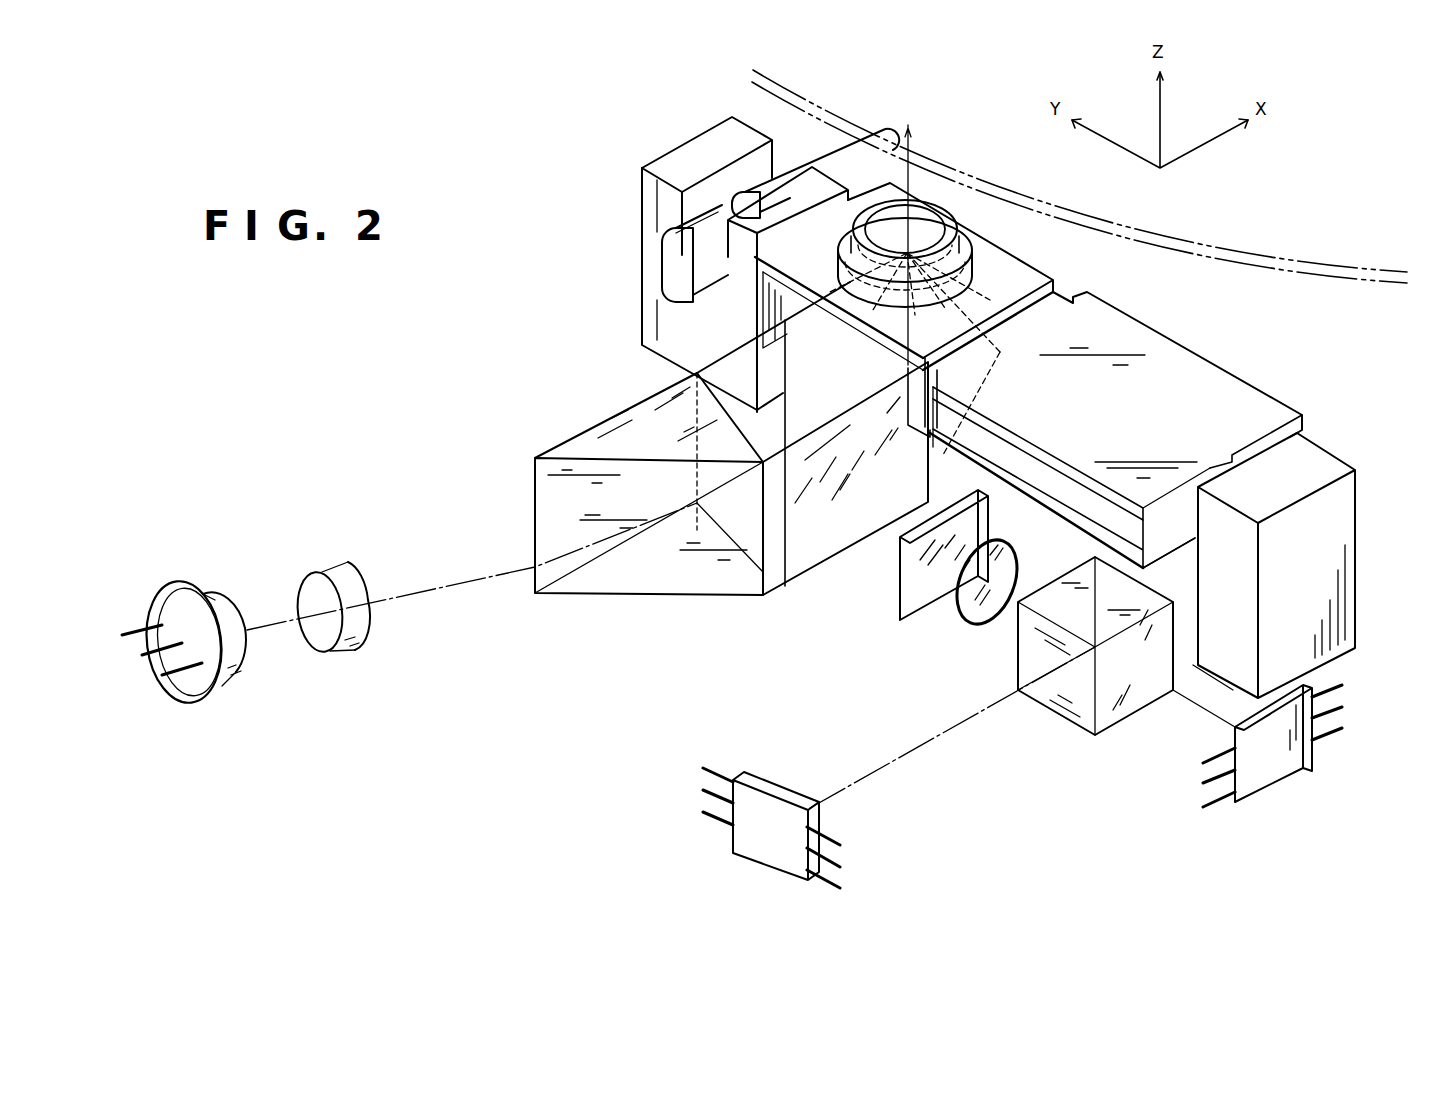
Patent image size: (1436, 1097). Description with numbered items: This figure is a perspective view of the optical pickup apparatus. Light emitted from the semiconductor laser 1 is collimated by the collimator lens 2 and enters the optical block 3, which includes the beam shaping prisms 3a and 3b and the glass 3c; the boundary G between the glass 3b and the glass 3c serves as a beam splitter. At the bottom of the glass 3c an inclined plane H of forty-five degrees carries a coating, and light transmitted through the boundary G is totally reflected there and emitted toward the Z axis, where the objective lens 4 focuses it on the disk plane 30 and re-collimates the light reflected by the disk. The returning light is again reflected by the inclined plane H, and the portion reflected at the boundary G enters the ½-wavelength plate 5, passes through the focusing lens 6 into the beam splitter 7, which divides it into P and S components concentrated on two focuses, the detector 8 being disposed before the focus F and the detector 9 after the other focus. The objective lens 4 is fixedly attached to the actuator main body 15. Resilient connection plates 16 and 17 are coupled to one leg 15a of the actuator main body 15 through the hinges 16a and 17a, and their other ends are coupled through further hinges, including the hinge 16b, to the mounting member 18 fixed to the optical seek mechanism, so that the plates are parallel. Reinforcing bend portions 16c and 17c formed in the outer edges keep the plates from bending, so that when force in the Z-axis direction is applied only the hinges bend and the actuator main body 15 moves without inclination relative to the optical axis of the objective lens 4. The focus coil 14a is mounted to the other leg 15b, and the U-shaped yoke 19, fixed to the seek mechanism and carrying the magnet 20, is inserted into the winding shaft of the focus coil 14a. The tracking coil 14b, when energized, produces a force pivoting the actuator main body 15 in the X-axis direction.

The semiconductor laser 1 is at (236, 675).
The collimator lens 2 is at (353, 650).
The optical block 3 is at (693, 494).
The beam shaping prism 3a is at (600, 600).
The beam shaping prism 3b is at (777, 580).
The glass 3c is at (862, 552).
The objective lens 4 is at (963, 213).
The ½-wavelength plate 5 is at (923, 623).
The focusing lens 6 is at (987, 623).
The beam splitter 7 is at (1095, 728).
The detector 8 is at (1270, 780).
The detector 9 is at (743, 848).
The focus coil 14a is at (707, 302).
The tracking coil 14b is at (783, 165).
The actuator main body 15 is at (830, 321).
The leg of the actuator main body 15a is at (900, 403).
The other leg of the actuator main body 15b is at (697, 373).
The connection plate 16 is at (1155, 395).
The hinge 16a is at (1053, 290).
The hinge 16b is at (1230, 460).
The reinforcing bend portion 16c is at (1293, 430).
The connection plate 17 is at (1042, 490).
The hinge 17a is at (910, 425).
The reinforcing bend portion 17c is at (1025, 497).
The mounting member 18 is at (1350, 503).
The U-shaped yoke 19 is at (642, 247).
The magnet 20 is at (710, 160).
The disk plane 30 is at (1315, 270).
The focus F is at (750, 573).
The boundary G is at (785, 542).
The inclined plane H is at (1000, 370).